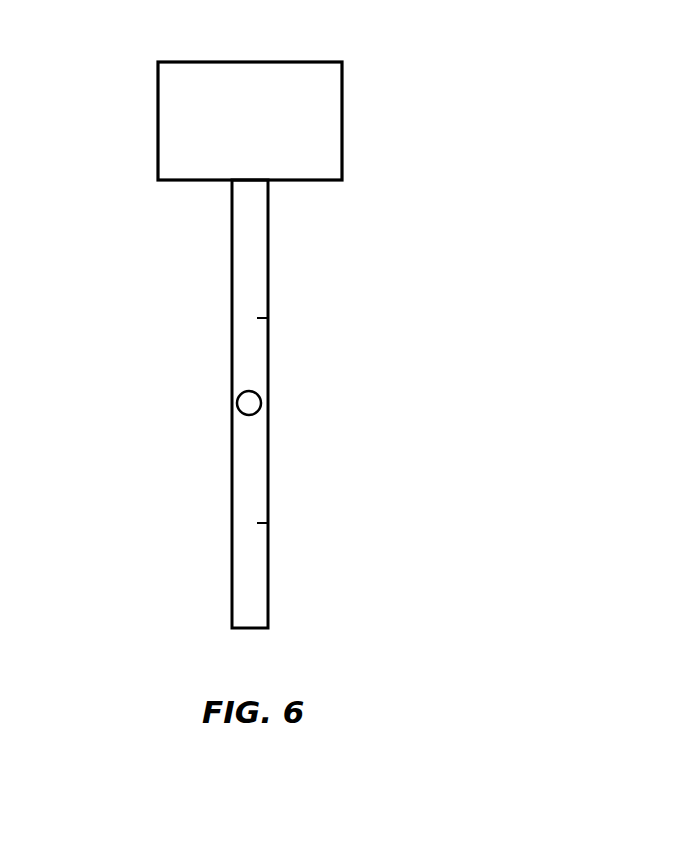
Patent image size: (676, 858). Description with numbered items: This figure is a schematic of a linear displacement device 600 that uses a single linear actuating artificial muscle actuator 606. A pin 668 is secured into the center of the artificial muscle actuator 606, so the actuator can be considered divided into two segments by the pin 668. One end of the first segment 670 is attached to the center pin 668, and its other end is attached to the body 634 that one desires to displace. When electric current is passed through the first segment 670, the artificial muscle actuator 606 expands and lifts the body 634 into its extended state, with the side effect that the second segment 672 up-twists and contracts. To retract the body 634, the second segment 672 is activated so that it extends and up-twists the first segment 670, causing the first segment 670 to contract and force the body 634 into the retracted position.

The linear displacement device 600 is at (452, 123).
The artificial muscle actuator 606 is at (160, 272).
The body 634 is at (275, 62).
The pin 668 is at (253, 403).
The first segment 670 is at (257, 318).
The second segment 672 is at (257, 523).